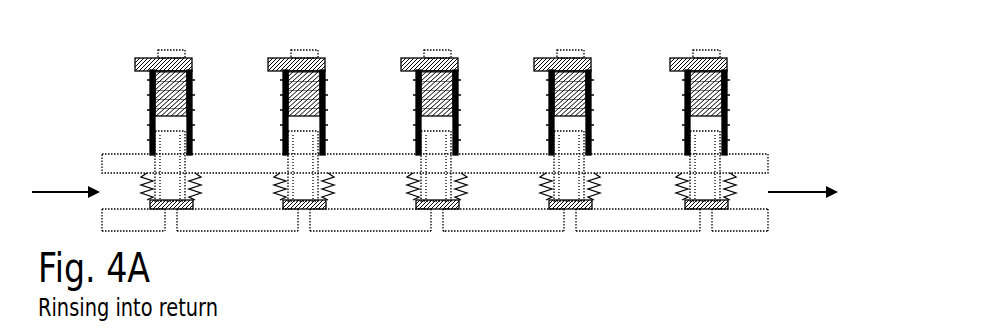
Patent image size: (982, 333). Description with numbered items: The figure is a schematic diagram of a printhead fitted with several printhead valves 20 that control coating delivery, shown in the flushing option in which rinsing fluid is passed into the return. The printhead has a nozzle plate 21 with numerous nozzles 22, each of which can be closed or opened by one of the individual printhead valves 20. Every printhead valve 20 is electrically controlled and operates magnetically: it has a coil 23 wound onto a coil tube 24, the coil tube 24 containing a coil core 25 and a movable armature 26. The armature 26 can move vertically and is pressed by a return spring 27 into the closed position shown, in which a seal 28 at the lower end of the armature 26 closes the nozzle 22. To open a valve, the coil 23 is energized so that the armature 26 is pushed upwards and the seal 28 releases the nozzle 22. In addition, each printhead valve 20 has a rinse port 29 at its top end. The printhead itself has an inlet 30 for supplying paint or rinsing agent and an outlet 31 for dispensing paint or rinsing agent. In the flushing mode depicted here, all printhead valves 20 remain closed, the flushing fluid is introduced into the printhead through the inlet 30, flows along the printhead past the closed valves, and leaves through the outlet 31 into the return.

The printhead valve 20 is at (439, 104).
The nozzle plate 21 is at (372, 218).
The nozzle 22 is at (568, 222).
The coil 23 is at (458, 101).
The coil tube 24 is at (417, 113).
The coil core 25 is at (573, 62).
The armature 26 is at (457, 141).
The return spring 27 is at (460, 178).
The seal 28 is at (420, 208).
The rinse port 29 is at (415, 57).
The inlet 30 is at (128, 202).
The outlet 31 is at (763, 202).